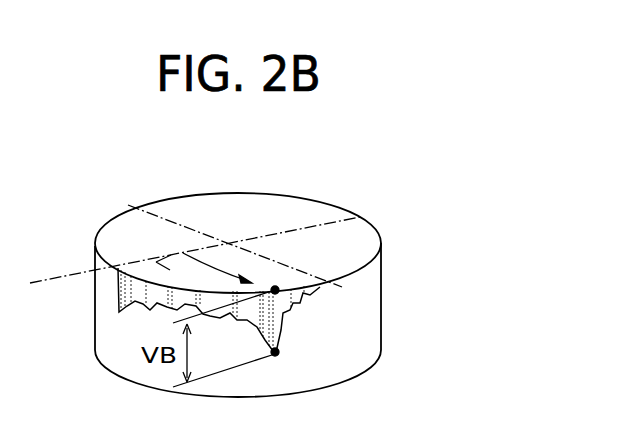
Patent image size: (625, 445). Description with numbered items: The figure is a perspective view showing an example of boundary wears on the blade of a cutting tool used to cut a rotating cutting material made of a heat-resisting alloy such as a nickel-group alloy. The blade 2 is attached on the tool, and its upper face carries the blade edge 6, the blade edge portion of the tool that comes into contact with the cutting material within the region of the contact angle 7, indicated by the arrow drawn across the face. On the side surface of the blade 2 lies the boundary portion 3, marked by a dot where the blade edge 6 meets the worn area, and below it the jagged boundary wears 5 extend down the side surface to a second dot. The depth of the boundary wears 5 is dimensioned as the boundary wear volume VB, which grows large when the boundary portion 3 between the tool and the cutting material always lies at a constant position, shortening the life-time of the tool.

The blade 2 is at (110, 318).
The boundary portion 3 is at (292, 297).
The boundary wears 5 is at (280, 354).
The blade edge 6 is at (381, 230).
The contact angle 7 is at (182, 272).